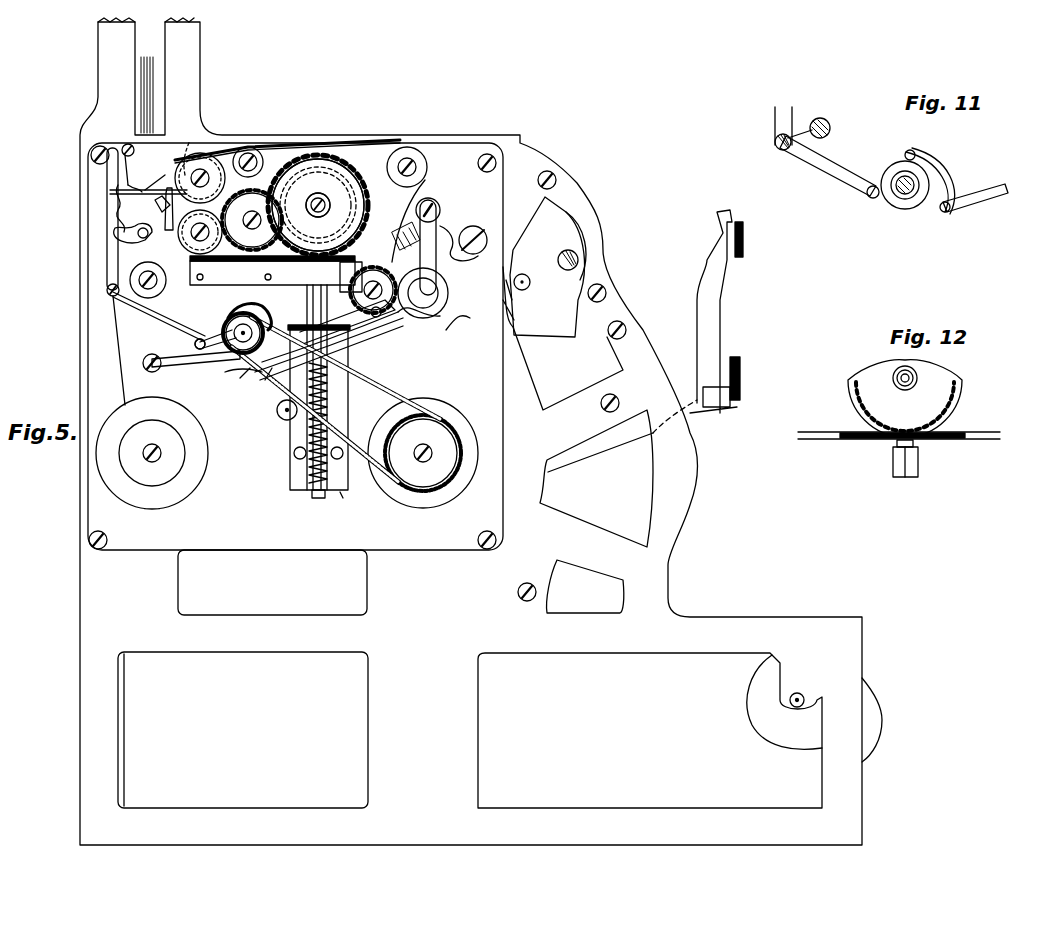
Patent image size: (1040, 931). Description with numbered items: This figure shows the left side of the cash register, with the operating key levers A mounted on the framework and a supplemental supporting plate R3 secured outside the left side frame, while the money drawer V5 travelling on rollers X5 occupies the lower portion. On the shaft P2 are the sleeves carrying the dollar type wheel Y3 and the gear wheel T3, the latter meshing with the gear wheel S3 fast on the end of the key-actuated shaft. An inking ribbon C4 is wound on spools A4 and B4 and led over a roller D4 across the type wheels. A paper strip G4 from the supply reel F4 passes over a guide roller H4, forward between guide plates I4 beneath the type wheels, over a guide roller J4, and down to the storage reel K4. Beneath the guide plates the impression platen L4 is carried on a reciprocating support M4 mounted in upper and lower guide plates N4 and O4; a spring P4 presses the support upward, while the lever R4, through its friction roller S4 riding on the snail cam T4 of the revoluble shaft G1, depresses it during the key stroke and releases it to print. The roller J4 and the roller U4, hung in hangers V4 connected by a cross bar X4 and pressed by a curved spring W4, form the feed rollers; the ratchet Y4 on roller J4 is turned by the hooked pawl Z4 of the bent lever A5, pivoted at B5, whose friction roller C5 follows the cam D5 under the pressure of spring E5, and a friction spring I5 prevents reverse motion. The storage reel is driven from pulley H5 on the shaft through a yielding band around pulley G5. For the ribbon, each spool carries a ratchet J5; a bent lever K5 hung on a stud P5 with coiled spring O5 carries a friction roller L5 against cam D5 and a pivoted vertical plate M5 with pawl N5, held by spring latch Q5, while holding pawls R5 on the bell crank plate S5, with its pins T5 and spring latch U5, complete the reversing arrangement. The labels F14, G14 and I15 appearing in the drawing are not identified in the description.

In FIG. 5, the key lever A is at (481, 431).
In FIG. 5, the supplemental supporting plate R3 is at (295, 346).
In FIG. 5, the money drawer V5 is at (650, 730).
In FIG. 5, the roller X5 is at (784, 702).
In FIG. 5, the type wheel Y3 is at (326, 158).
In FIG. 12, the type wheel Y3 is at (905, 396).
In FIG. 5, the gear wheel T3 is at (340, 170).
In FIG. 5, the shaft P2 is at (326, 202).
In FIG. 12, the shaft P2 is at (912, 382).
In FIG. 5, the gear wheel S3 is at (252, 220).
In FIG. 5, the spool A4 is at (205, 155).
In FIG. 5, the spool B4 is at (200, 232).
In FIG. 5, the inking ribbon C4 is at (232, 152).
In FIG. 12, the inking ribbon C4 is at (899, 424).
In FIG. 5, the roller D4 is at (262, 150).
In FIG. 5, the supply reel F4 is at (412, 160).
In FIG. 5, the hanger V4 is at (437, 222).
In FIG. 5, the feed roller U4 is at (446, 296).
In FIG. 5, the cross bar X4 is at (466, 240).
In FIG. 5, the curved spring W4 is at (460, 250).
In FIG. 5, the ratchet Y4 is at (419, 318).
In FIG. 5, the hooked pawl Z4 is at (458, 323).
In FIG. 5, the guide roller J4 is at (374, 285).
In FIG. 5, the friction spring I5 is at (390, 221).
In FIG. 5, the impression platen L4 is at (346, 287).
In FIG. 12, the impression platen L4 is at (915, 446).
In FIG. 5, the upper guide plate N4 is at (347, 322).
In FIG. 5, the guide plate I4 is at (220, 275).
In FIG. 12, the guide plate I4 is at (904, 450).
In FIG. 5, the reciprocating support M4 is at (306, 303).
In FIG. 12, the reciprocating support M4 is at (891, 467).
In FIG. 5, the spring P4 is at (296, 453).
In FIG. 5, the lower guide plate O4 is at (334, 492).
In FIG. 5, the stud I15 is at (342, 495).
In FIG. 5, the storage reel K4 is at (452, 408).
In FIG. 5, the pulley G5 is at (423, 453).
In FIG. 5, the friction roller C5 is at (226, 325).
In FIG. 11, the friction roller C5 is at (913, 143).
In FIG. 5, the snail cam T4 is at (260, 314).
In FIG. 5, the friction roller L5 is at (205, 344).
In FIG. 11, the friction roller L5 is at (871, 198).
In FIG. 5, the revoluble shaft G1 is at (195, 343).
In FIG. 11, the revoluble shaft G1 is at (905, 200).
In FIG. 5, the lever R4 is at (192, 364).
In FIG. 5, the friction roller S4 is at (237, 378).
In FIG. 5, the pulley H5 is at (241, 383).
In FIG. 5, the pivot B5 is at (265, 383).
In FIG. 11, the pivot B5 is at (950, 209).
In FIG. 5, the bent lever A5 is at (360, 345).
In FIG. 11, the bent lever A5 is at (990, 186).
In FIG. 5, the spring E5 is at (329, 350).
In FIG. 5, the wheel F14 is at (195, 440).
In FIG. 5, the guide roller H4 is at (160, 284).
In FIG. 5, the spring O5 is at (110, 268).
In FIG. 11, the spring O5 is at (812, 120).
In FIG. 5, the stud P5 is at (107, 290).
In FIG. 11, the stud P5 is at (774, 142).
In FIG. 5, the bent lever K5 is at (118, 312).
In FIG. 11, the bent lever K5 is at (828, 160).
In FIG. 5, the rod G14 is at (135, 350).
In FIG. 5, the vertical plate M5 is at (110, 176).
In FIG. 5, the spring latch U5 is at (120, 162).
In FIG. 5, the pin T5 is at (138, 175).
In FIG. 5, the pawl N5 is at (138, 184).
In FIG. 5, the holding pawl R5 is at (155, 179).
In FIG. 5, the bell crank plate S5 is at (156, 209).
In FIG. 5, the spring latch Q5 is at (142, 240).
In FIG. 5, the ratchet J5 is at (183, 148).
In FIG. 11, the cam D5 is at (940, 212).
In FIG. 12, the paper strip G4 is at (896, 450).